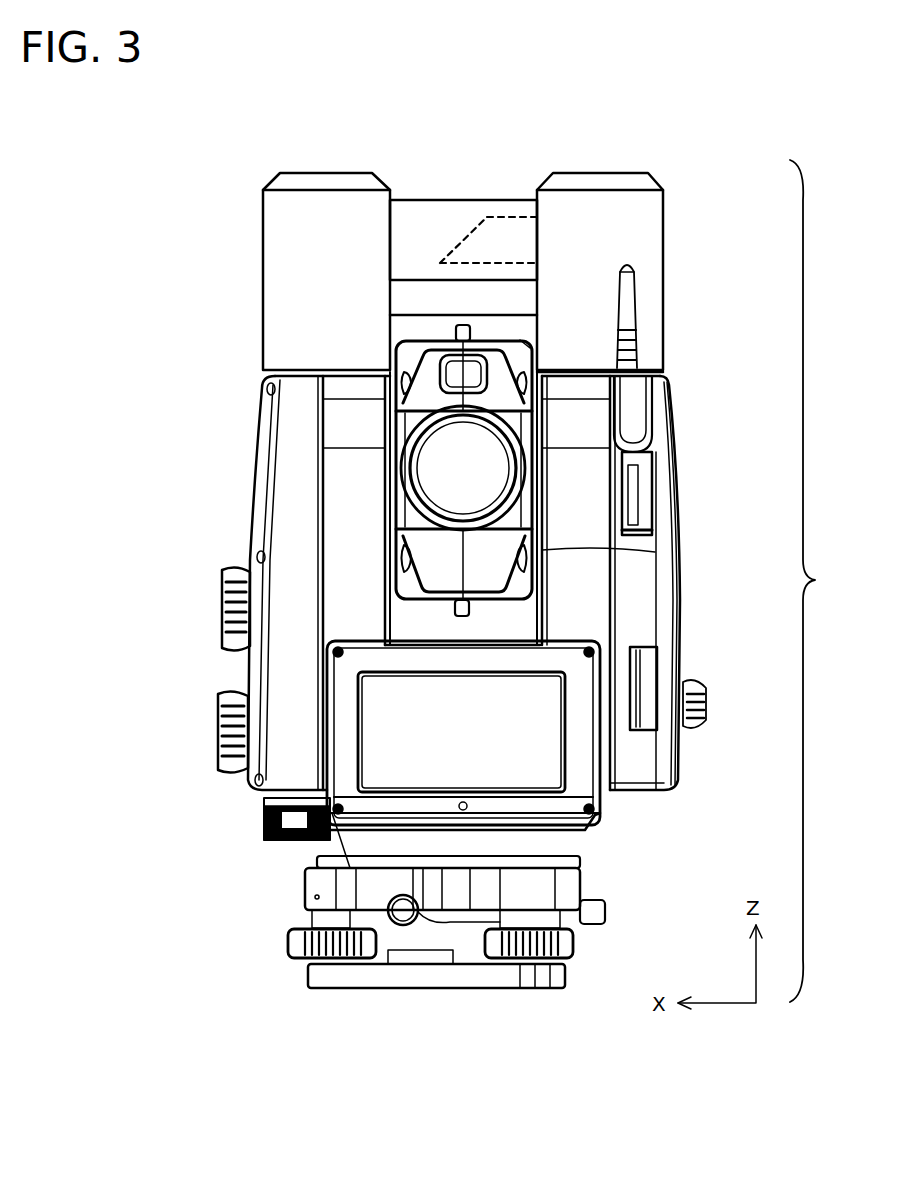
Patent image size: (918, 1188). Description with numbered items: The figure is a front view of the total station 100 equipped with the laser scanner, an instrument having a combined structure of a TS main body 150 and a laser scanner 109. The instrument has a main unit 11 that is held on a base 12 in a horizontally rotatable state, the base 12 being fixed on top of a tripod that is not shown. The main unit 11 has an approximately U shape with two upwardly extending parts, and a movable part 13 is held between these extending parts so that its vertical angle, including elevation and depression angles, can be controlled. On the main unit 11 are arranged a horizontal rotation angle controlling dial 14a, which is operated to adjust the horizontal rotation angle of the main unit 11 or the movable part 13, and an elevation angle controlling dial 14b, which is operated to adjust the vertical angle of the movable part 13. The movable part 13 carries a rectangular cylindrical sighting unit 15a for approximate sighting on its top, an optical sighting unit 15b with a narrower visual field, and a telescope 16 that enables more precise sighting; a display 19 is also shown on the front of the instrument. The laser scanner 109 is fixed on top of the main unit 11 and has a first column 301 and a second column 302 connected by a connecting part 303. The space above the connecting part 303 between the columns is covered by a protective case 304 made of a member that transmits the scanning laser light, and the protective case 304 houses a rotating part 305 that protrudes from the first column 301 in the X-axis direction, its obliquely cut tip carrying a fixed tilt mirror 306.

The total station equipped with the laser scanner 100 is at (511, 557).
The laser scanner 109 is at (421, 241).
The first column 301 is at (600, 215).
The second column 302 is at (294, 210).
The connecting part 303 is at (412, 292).
The protective case 304 is at (402, 200).
The rotating part 305 is at (515, 232).
The tilt mirror 306 is at (448, 240).
The main unit 11 is at (288, 478).
The base 12 is at (330, 888).
The movable part 13 is at (483, 570).
The horizontal rotation angle controlling dial 14a is at (222, 580).
The elevation angle controlling dial 14b is at (218, 706).
The sighting unit 15a is at (465, 450).
The optical sighting unit 15b is at (520, 340).
The telescope 16 is at (483, 462).
The TS main body 150 is at (675, 508).
The display unit 19 is at (540, 770).